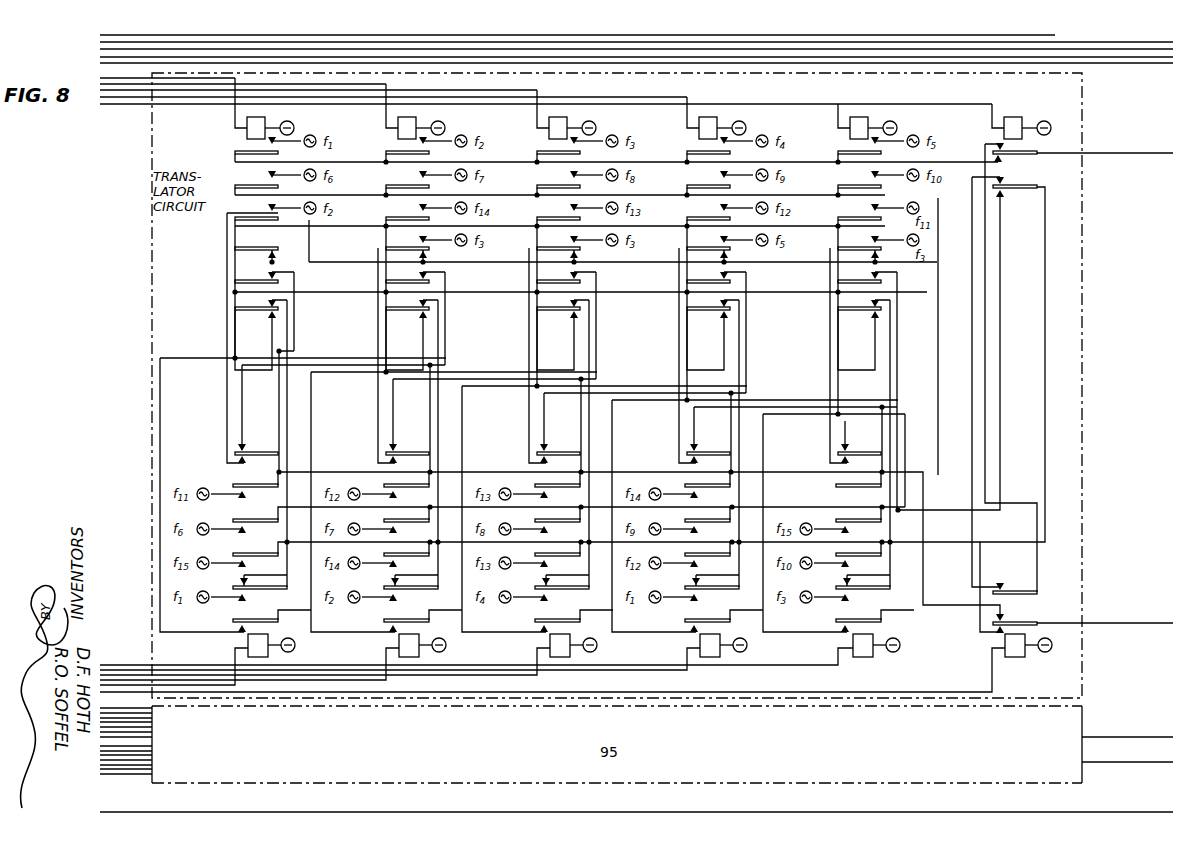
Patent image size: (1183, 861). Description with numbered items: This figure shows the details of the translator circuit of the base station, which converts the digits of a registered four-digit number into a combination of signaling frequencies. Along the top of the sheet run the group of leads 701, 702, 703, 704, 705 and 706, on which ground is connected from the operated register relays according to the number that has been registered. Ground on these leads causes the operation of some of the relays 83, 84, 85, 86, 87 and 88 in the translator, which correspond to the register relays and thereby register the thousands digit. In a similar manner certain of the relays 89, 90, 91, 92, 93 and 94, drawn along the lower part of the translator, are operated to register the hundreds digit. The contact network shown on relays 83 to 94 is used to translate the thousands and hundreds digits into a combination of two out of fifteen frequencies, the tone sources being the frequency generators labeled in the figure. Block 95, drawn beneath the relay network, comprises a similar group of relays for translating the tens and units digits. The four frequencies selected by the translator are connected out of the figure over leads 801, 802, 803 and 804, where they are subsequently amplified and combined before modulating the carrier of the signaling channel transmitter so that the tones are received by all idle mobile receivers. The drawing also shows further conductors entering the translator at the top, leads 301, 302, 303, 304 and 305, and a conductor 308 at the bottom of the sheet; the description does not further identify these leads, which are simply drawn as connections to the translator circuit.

The relay 83 is at (247, 132).
The relay 84 is at (398, 132).
The relay 85 is at (549, 132).
The relay 86 is at (699, 132).
The relay 87 is at (850, 132).
The relay 88 is at (1004, 132).
The relay 89 is at (248, 644).
The relay 90 is at (399, 644).
The relay 91 is at (550, 644).
The relay 92 is at (700, 644).
The relay 93 is at (853, 644).
The relay 94 is at (1005, 644).
The block 95 is at (591, 744).
The conductor 301 is at (1085, 38).
The conductor 302 is at (636, 34).
The conductor 303 is at (636, 38).
The conductor 304 is at (1127, 59).
The conductor 305 is at (1172, 63).
The conductor 308 is at (1166, 810).
The lead 701 is at (145, 76).
The lead 702 is at (386, 84).
The lead 703 is at (537, 90).
The lead 704 is at (687, 97).
The lead 705 is at (838, 104).
The lead 706 is at (992, 108).
The lead 801 is at (1145, 152).
The lead 802 is at (1145, 622).
The lead 803 is at (1154, 735).
The lead 804 is at (1154, 760).